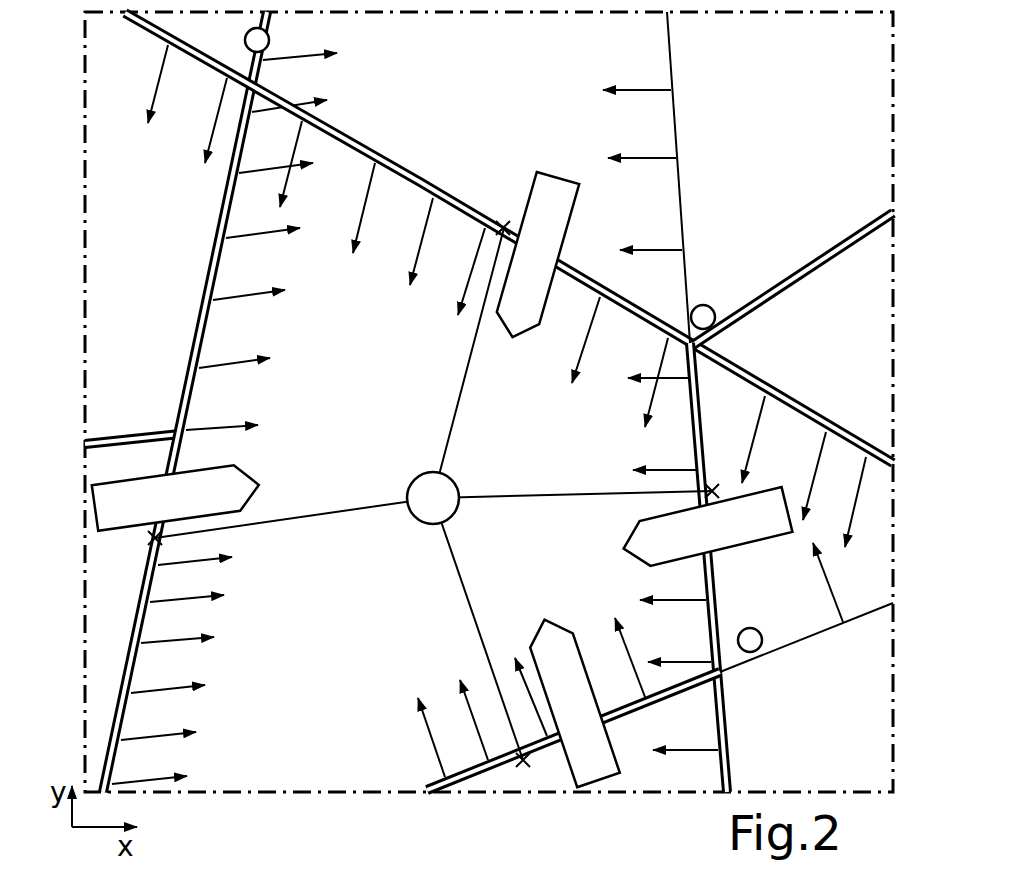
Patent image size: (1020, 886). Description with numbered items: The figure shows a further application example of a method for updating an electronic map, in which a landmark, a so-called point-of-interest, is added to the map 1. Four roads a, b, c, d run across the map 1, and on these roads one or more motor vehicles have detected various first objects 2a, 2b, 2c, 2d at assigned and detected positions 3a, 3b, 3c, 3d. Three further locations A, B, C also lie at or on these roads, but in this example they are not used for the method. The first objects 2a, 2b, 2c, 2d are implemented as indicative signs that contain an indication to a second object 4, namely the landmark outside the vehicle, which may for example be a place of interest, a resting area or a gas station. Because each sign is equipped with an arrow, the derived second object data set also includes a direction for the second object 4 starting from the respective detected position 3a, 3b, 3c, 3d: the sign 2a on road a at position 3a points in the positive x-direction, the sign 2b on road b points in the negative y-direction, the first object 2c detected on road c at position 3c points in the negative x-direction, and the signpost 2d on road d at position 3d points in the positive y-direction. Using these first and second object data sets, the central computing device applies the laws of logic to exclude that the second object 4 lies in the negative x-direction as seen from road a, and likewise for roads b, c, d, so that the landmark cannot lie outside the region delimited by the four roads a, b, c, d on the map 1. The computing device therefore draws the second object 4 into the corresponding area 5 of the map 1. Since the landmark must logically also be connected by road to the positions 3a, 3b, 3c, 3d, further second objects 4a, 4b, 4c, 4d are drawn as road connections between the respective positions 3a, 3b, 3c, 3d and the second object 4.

The map 1 is at (786, 77).
The first object 2a is at (137, 477).
The first object 2b is at (572, 175).
The first object 2c is at (778, 540).
The first object 2d is at (618, 772).
The detected position 3a is at (150, 542).
The detected position 3b is at (505, 225).
The detected position 3c is at (700, 494).
The detected position 3d is at (528, 766).
The second object 4 is at (428, 488).
The further second object 4a is at (303, 520).
The further second object 4b is at (465, 362).
The further second object 4c is at (522, 494).
The further second object 4d is at (462, 604).
The area 5 is at (351, 367).
The location A is at (269, 44).
The location B is at (715, 306).
The location C is at (762, 646).
The road a is at (205, 278).
The road b is at (433, 178).
The road c is at (709, 428).
The road d is at (722, 718).